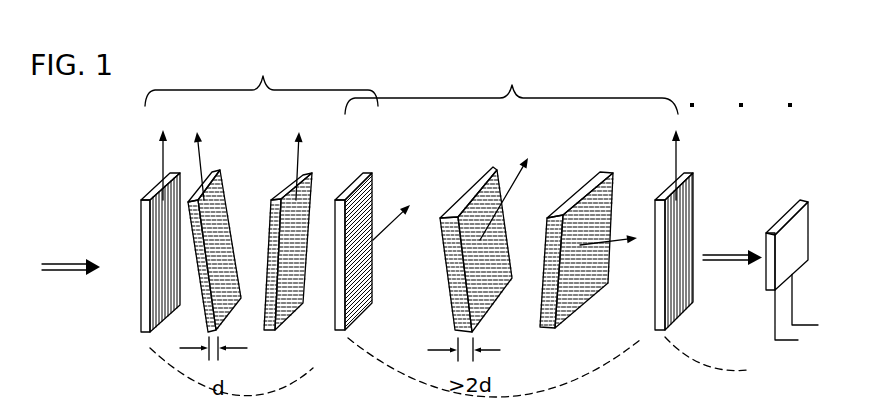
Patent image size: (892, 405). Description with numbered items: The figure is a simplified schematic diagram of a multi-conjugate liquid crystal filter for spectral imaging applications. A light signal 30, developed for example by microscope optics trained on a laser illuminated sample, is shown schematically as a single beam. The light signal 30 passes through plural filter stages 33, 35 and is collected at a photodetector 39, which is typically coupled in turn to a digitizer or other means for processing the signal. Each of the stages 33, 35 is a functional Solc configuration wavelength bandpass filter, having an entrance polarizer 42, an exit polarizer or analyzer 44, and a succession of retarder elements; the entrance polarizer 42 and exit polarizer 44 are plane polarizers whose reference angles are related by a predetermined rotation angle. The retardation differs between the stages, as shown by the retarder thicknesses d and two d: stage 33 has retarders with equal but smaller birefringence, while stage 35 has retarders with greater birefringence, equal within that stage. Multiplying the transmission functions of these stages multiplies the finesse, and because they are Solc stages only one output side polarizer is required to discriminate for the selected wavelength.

The light signal 30 is at (72, 270).
The first filter stage 33 is at (378, 97).
The second filter stage 35 is at (457, 92).
The photodetector 39 is at (798, 230).
The entrance polarizer 42 is at (146, 328).
The exit polarizer 44 is at (655, 332).